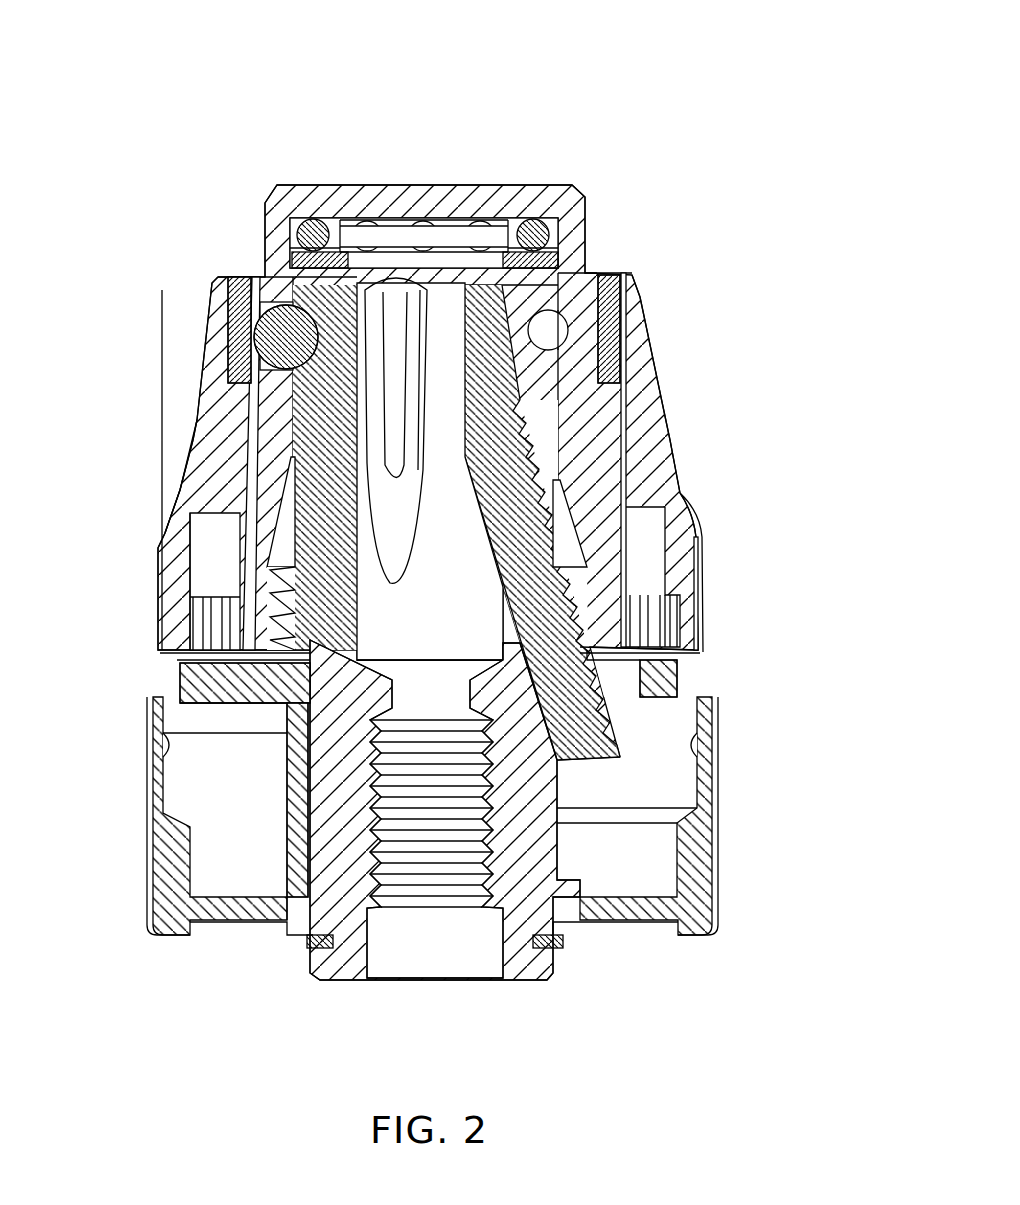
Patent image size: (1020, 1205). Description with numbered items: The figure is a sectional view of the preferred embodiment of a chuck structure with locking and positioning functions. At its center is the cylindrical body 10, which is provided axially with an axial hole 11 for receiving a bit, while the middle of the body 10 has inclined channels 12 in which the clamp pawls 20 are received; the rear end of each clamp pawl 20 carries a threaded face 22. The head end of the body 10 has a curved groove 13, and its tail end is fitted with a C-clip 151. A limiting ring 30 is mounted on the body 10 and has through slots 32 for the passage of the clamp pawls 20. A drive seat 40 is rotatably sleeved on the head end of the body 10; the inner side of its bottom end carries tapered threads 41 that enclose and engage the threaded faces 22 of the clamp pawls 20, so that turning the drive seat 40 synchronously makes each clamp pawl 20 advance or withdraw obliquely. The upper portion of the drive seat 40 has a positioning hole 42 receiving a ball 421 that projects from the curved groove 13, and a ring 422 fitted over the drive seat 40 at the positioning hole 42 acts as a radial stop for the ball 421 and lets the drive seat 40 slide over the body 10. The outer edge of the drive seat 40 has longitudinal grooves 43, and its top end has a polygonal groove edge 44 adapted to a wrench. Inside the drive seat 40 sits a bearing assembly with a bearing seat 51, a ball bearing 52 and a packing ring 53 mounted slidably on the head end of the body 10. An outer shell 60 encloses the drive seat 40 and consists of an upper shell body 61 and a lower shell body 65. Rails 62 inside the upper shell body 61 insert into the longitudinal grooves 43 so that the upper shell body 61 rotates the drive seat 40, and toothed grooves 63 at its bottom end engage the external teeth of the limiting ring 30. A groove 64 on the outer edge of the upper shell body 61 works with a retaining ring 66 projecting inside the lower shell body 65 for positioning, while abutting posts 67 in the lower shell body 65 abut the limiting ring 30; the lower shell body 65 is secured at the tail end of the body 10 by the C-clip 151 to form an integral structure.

The body 10 is at (320, 985).
The axial hole 11 is at (445, 285).
The inclined channels 12 is at (620, 487).
The curved groove 13 is at (540, 320).
The clamp pawls 20 is at (507, 433).
The threaded face 22 is at (685, 680).
The limiting ring 30 is at (225, 685).
The through slots 32 is at (622, 687).
The drive seat 40 is at (595, 400).
The tapered threads 41 is at (247, 587).
The positioning hole 42 is at (270, 320).
The longitudinal grooves 43 is at (243, 533).
The polygonal groove edge 44 is at (560, 200).
The bearing seat 51 is at (500, 255).
The ball bearing 52 is at (312, 220).
The packing ring 53 is at (300, 252).
The outer shell 60 is at (708, 578).
The upper shell body 61 is at (212, 432).
The rails 62 is at (240, 422).
The toothed grooves 63 is at (193, 633).
The groove 64 is at (705, 742).
The lower shell body 65 is at (690, 845).
The retaining ring 66 is at (165, 748).
The abutting posts 67 is at (292, 862).
The C-clip 151 is at (563, 937).
The ball 421 is at (240, 335).
The ring 422 is at (607, 300).